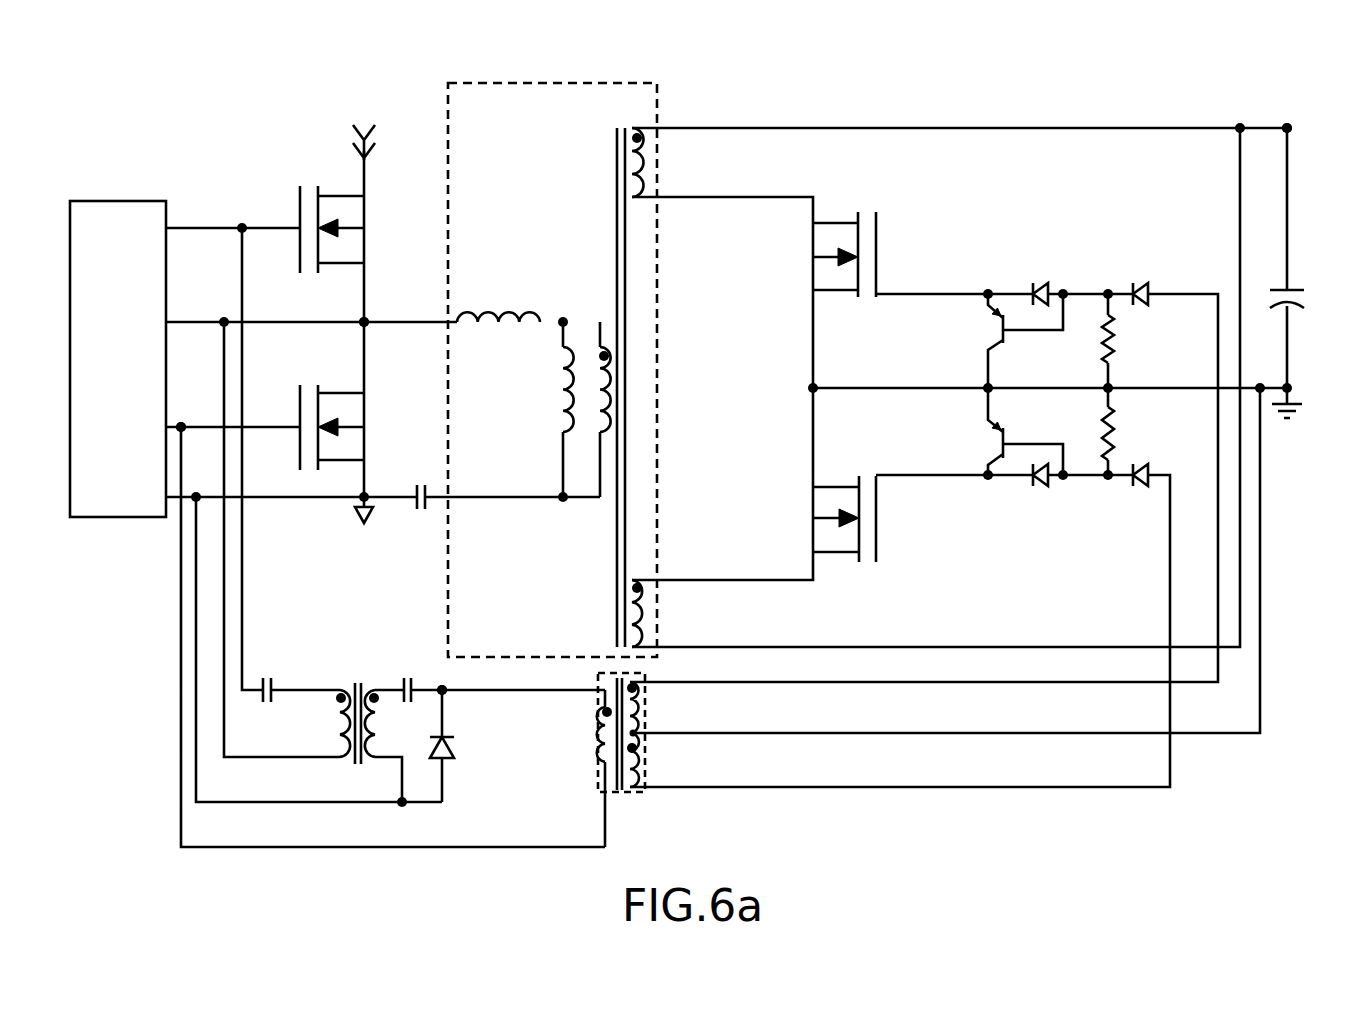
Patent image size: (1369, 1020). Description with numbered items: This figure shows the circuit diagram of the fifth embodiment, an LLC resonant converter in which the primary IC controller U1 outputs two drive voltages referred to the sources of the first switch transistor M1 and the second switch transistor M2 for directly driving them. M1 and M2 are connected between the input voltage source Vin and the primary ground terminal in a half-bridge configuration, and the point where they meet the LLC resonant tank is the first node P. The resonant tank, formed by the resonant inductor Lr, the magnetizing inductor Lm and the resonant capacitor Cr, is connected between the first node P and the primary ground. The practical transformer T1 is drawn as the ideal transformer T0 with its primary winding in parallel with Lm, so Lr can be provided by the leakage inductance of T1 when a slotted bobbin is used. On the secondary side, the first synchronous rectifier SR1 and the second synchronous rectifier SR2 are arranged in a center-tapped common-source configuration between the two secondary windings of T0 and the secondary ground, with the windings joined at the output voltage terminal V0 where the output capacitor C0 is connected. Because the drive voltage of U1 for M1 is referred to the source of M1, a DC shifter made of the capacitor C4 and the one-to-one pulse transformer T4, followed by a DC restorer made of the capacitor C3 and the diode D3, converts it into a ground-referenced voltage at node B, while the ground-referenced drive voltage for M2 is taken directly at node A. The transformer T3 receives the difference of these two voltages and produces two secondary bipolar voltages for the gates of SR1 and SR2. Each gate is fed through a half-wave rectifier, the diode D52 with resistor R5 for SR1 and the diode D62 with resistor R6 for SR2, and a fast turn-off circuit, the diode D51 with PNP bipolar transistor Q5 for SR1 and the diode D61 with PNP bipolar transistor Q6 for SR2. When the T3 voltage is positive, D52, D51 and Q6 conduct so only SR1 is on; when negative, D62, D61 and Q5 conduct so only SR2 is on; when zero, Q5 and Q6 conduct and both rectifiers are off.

The primary IC controller U1 is at (118, 359).
The input voltage source Vin is at (365, 126).
The first switch transistor M1 is at (358, 229).
The second switch transistor M2 is at (358, 454).
The first node P is at (353, 338).
The node A is at (181, 412).
The resonant inductor Lr is at (498, 293).
The magnetizing inductor Lm is at (544, 389).
The resonant capacitor Cr is at (416, 481).
The practical transformer T1 is at (492, 82).
The ideal transformer T0 is at (624, 373).
The first synchronous rectifier SR1 is at (813, 254).
The second synchronous rectifier SR2 is at (813, 519).
The PNP bipolar transistor Q5 is at (1011, 341).
The PNP bipolar transistor Q6 is at (1011, 431).
The diode D51 is at (1049, 280).
The diode D52 is at (1149, 280).
The diode D61 is at (1049, 491).
The diode D62 is at (1149, 491).
The resistor R5 is at (1126, 339).
The resistor R6 is at (1126, 433).
The output voltage terminal V0 is at (1307, 132).
The output capacitor C0 is at (1308, 350).
The capacitor C4 is at (274, 673).
The pulse transformer T4 is at (357, 704).
The capacitor C3 is at (407, 673).
The node B is at (437, 670).
The diode D3 is at (426, 746).
The transformer T3 is at (610, 730).